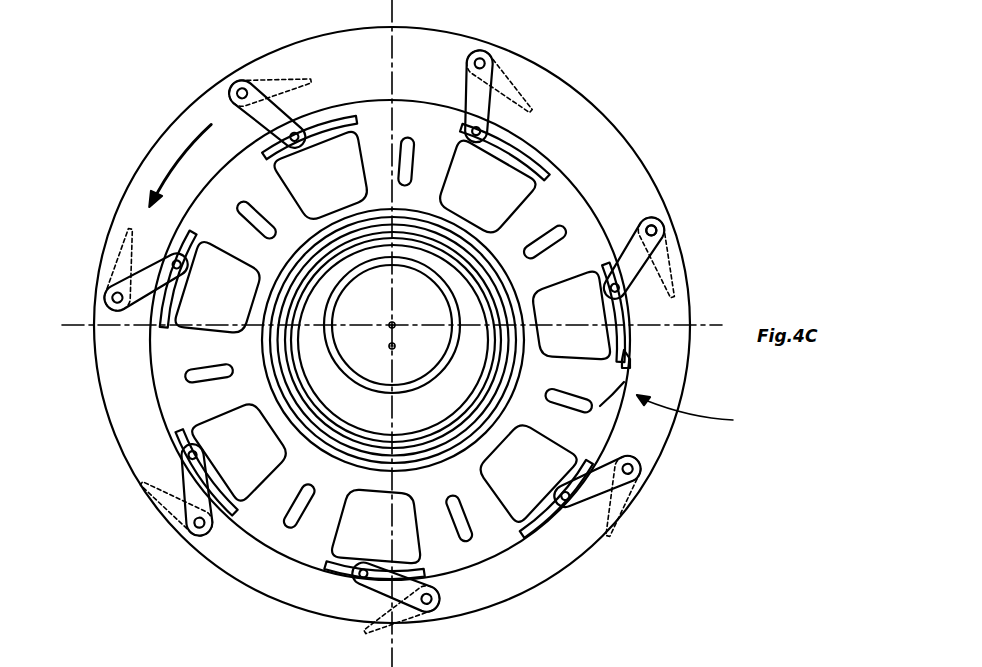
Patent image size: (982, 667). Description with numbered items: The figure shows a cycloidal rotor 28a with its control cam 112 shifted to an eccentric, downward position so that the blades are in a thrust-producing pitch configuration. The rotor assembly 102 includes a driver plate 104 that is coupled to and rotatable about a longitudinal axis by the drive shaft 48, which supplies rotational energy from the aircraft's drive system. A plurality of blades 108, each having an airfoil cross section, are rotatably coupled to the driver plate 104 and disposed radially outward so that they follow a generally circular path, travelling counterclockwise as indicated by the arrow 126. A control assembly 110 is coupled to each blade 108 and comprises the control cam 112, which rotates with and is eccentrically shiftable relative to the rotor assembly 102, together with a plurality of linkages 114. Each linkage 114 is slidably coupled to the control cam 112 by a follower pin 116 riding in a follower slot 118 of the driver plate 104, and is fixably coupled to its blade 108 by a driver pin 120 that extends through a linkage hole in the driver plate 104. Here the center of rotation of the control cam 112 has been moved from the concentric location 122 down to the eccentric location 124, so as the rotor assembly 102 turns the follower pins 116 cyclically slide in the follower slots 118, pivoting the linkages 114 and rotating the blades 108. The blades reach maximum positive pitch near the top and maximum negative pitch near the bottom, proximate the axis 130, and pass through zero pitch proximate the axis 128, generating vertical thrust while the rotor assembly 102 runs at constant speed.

The cycloidal rotor 28a is at (237, 64).
The drive shaft 48 is at (452, 292).
The rotor assembly 102 is at (118, 194).
The driver plate 104 is at (133, 238).
The blade 108 is at (683, 262).
The control assembly 110 is at (701, 412).
The control cam 112 is at (612, 410).
The linkage 114 is at (632, 268).
The follower pin 116 is at (624, 344).
The follower slot 118 is at (627, 356).
The driver pin 120 is at (658, 230).
The concentric location 122 is at (389, 324).
The eccentric location 124 is at (396, 345).
The arrow 126 is at (183, 146).
The axis 128 is at (70, 334).
The axis 130 is at (398, 642).